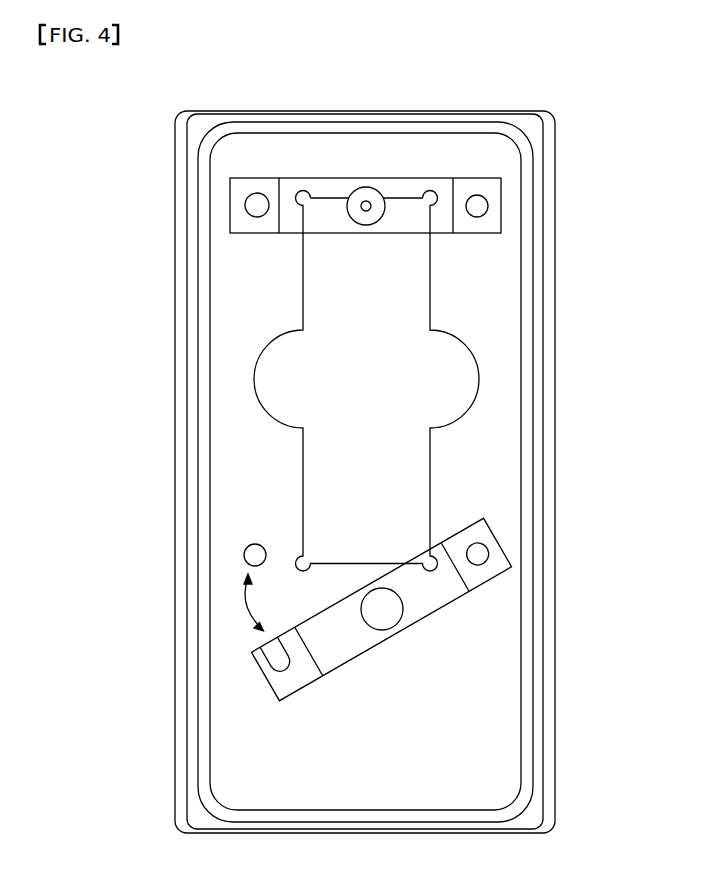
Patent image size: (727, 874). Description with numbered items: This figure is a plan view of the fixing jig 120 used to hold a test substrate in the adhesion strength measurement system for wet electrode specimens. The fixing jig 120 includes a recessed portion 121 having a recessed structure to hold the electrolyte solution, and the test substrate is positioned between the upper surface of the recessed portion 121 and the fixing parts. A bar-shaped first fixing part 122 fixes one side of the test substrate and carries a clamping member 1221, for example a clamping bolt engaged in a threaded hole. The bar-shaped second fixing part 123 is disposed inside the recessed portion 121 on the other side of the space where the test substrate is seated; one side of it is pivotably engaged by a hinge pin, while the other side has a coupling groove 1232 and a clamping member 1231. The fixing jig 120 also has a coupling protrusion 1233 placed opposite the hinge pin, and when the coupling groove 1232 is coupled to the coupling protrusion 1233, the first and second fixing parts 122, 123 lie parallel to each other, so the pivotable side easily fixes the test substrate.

The fixing jig 120 is at (90, 138).
The recessed portion 121 is at (500, 288).
The first fixing part 122 is at (498, 191).
The clamping member 1221 is at (355, 210).
The second fixing part 123 is at (501, 556).
The clamping member 1231 is at (398, 607).
The coupling groove 1232 is at (263, 645).
The coupling protrusion 1233 is at (245, 549).